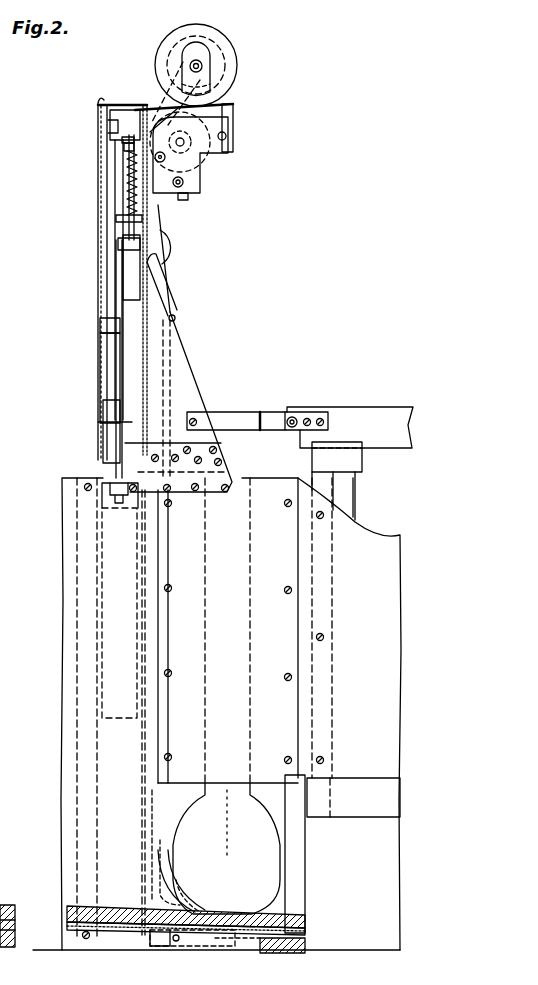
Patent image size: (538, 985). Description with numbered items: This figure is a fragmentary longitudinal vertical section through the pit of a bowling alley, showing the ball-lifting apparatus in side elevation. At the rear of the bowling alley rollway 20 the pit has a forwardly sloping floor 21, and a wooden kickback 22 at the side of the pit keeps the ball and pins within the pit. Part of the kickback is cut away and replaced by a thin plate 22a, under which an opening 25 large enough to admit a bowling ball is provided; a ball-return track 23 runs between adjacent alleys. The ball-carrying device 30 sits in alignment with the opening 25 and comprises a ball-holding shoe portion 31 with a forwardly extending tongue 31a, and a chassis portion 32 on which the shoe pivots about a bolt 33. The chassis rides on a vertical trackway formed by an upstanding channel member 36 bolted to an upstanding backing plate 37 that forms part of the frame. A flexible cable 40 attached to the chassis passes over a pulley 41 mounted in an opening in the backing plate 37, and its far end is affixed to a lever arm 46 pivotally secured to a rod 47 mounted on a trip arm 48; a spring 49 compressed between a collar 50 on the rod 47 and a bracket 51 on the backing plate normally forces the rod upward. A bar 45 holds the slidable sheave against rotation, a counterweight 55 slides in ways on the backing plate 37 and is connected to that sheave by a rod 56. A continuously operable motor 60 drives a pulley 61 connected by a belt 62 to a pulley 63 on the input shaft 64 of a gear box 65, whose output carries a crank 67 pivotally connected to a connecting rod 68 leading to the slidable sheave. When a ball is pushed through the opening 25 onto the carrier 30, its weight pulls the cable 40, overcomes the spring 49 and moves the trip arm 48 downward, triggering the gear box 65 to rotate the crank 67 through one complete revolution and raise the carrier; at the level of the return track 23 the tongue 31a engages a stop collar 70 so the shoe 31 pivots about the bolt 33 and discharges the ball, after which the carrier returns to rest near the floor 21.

The bowling alley rollway 20 is at (370, 777).
The pit floor 21 is at (112, 905).
The kickback 22 is at (62, 483).
The thin plate 22a is at (242, 483).
The ball-return track 23 is at (385, 412).
The opening 25 is at (272, 820).
The ball-carrying device 30 is at (185, 897).
The ball-holding portion 31 is at (200, 906).
The tongue 31a is at (305, 945).
The chassis portion 32 is at (200, 946).
The bolt 33 is at (232, 946).
The upstanding channel member 36 is at (172, 725).
The backing plate 37 is at (140, 755).
The flexible cable 40 is at (160, 803).
The pulley 41 is at (157, 243).
The bar 45 is at (105, 362).
The lever arm 46 is at (110, 252).
The rod 47 is at (132, 197).
The trip arm 48 is at (133, 153).
The spring 49 is at (125, 207).
The collar 50 is at (130, 172).
The bracket 51 is at (123, 232).
The counterweight 55 is at (105, 598).
The rod 56 is at (105, 398).
The motor 60 is at (225, 55).
The pulley 61 is at (214, 67).
The belt 62 is at (218, 88).
The pulley 63 is at (203, 156).
The input shaft 64 is at (184, 142).
The gear box 65 is at (190, 200).
The crank 67 is at (123, 140).
The connecting rod 68 is at (100, 283).
The stop collar 70 is at (290, 427).